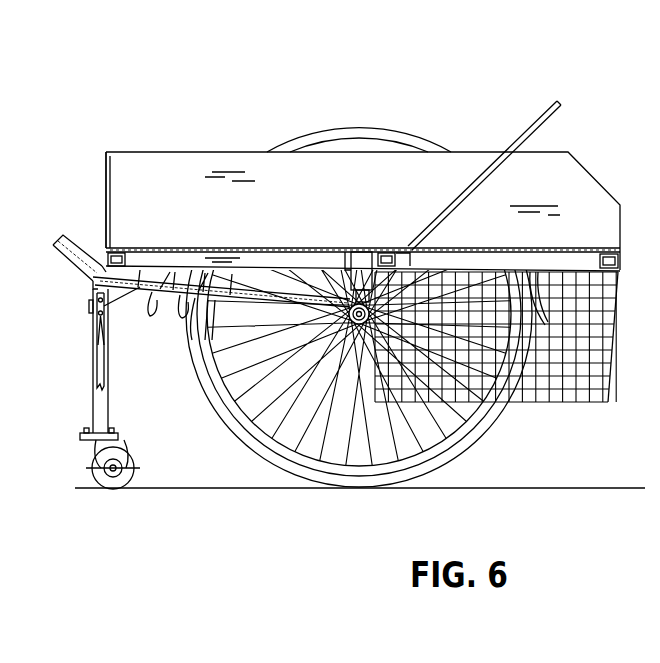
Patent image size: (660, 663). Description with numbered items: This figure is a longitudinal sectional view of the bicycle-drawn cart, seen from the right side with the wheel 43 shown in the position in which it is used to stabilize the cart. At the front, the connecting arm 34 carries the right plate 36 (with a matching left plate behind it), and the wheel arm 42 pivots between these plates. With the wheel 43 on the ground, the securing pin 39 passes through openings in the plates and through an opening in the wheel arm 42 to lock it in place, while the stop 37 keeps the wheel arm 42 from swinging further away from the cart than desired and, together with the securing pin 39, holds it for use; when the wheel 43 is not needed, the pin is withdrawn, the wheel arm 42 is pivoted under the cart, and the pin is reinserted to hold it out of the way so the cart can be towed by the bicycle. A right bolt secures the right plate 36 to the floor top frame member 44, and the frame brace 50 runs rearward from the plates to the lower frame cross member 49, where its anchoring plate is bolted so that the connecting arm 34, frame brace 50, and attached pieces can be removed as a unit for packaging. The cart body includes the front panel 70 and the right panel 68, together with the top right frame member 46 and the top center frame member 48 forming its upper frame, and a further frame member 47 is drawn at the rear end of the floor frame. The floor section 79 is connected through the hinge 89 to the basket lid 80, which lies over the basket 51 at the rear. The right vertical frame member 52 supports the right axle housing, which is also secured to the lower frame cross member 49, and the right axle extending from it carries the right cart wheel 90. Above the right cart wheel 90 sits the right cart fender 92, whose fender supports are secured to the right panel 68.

The connecting arm 34 is at (76, 236).
The right plate 36 is at (92, 288).
The stop 37 is at (92, 310).
The securing pin 39 is at (108, 350).
The wheel arm 42 is at (93, 355).
The wheel 43 is at (126, 457).
The floor top frame member 44 is at (125, 256).
The top right frame member 46 is at (210, 258).
The right frame bracket 47 is at (600, 258).
The top center frame member 48 is at (366, 260).
The lower frame cross member 49 is at (343, 262).
The frame brace 50 is at (148, 292).
The basket 51 is at (610, 360).
The right vertical frame member 52 is at (356, 272).
The right panel 68 is at (172, 160).
The front panel 70 is at (106, 160).
The floor section 79 is at (312, 248).
The basket lid 80 is at (528, 130).
The hinge 89 is at (407, 258).
The right cart wheel 90 is at (200, 386).
The right cart fender 92 is at (325, 130).